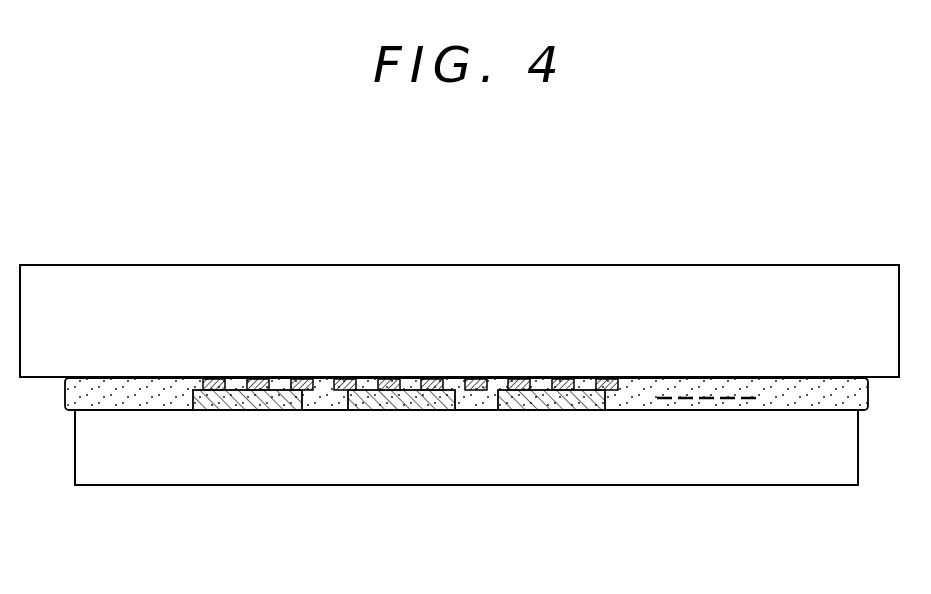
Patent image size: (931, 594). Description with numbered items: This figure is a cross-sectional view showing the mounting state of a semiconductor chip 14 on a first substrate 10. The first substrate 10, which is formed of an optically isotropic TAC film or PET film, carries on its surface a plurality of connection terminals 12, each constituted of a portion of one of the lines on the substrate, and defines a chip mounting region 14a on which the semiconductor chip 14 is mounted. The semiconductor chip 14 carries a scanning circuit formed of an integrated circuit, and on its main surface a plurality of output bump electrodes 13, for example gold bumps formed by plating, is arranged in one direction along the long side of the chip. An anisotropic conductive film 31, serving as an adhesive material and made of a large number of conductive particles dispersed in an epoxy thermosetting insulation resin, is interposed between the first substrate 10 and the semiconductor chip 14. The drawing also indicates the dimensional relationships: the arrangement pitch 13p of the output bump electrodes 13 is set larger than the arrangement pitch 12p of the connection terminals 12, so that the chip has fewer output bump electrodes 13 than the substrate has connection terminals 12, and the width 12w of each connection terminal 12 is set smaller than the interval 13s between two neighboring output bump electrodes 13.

The first substrate 10 is at (735, 292).
The connection terminal 12 is at (345, 380).
The output bump electrode 13 is at (207, 404).
The semiconductor chip 14 is at (737, 468).
The anisotropic conductive film 31 is at (125, 388).
The chip mounting region 14a is at (857, 367).
The arrangement pitch of connection terminals 12p is at (170, 325).
The width of connection terminal 12w is at (423, 325).
The arrangement pitch of output bump electrodes 13p is at (402, 422).
The interval between neighboring output bump electrodes 13s is at (422, 458).